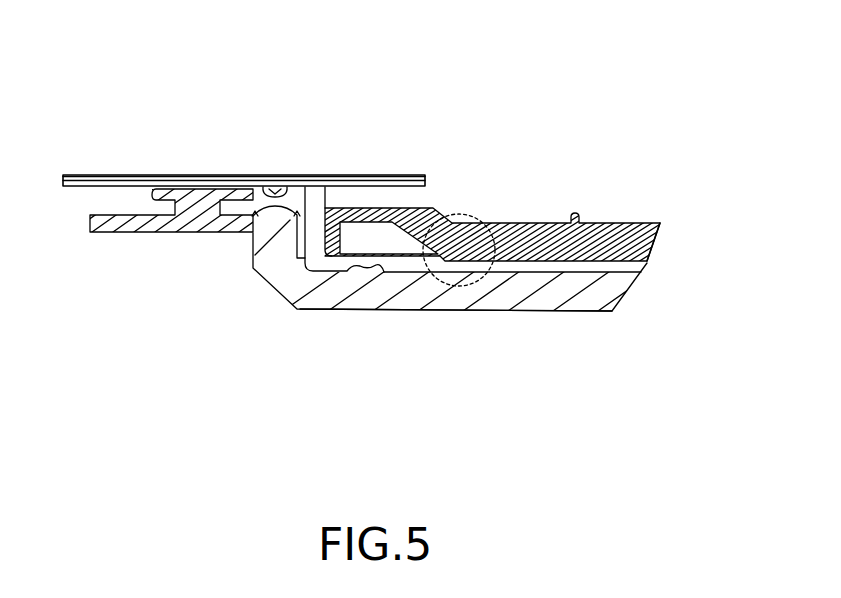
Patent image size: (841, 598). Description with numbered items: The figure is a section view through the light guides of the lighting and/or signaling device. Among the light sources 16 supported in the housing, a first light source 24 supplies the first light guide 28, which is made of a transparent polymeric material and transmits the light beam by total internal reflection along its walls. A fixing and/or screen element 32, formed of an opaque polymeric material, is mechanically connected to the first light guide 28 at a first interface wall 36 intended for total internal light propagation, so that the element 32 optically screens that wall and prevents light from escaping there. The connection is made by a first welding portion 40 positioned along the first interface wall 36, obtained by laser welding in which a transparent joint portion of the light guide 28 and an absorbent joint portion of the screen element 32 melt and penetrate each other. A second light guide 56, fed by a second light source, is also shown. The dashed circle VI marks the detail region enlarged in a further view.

The light sources 16 is at (213, 174).
The first light source 24 is at (164, 209).
The first light guide 28 is at (654, 243).
The fixing and/or screen element 32 is at (297, 258).
The first interface wall 36 is at (577, 263).
The first welding portion 40 is at (465, 222).
The second light guide 56 is at (528, 298).
The detail view VI is at (492, 243).